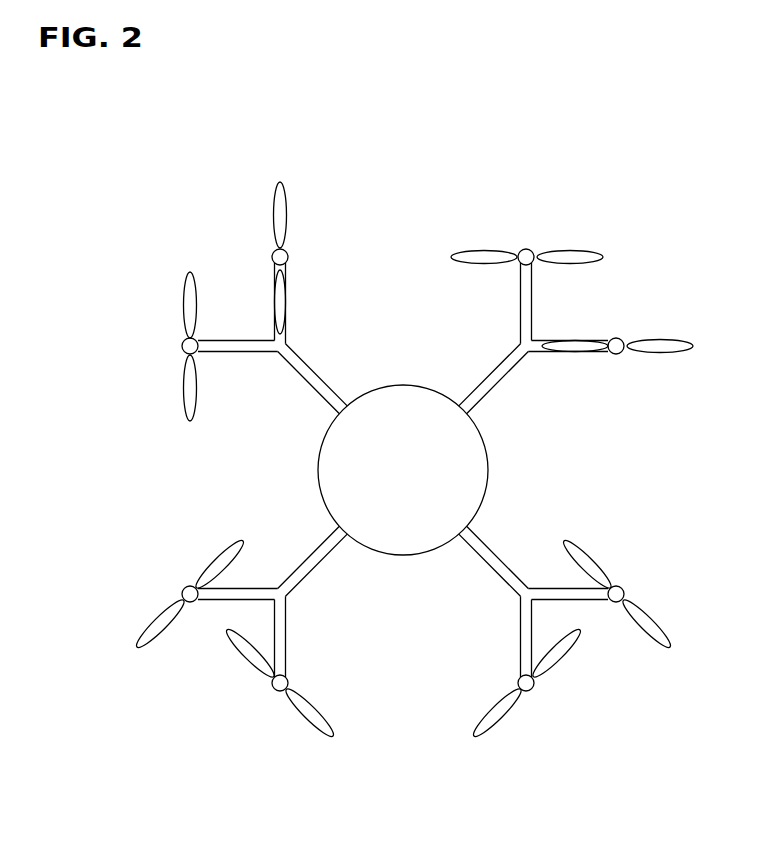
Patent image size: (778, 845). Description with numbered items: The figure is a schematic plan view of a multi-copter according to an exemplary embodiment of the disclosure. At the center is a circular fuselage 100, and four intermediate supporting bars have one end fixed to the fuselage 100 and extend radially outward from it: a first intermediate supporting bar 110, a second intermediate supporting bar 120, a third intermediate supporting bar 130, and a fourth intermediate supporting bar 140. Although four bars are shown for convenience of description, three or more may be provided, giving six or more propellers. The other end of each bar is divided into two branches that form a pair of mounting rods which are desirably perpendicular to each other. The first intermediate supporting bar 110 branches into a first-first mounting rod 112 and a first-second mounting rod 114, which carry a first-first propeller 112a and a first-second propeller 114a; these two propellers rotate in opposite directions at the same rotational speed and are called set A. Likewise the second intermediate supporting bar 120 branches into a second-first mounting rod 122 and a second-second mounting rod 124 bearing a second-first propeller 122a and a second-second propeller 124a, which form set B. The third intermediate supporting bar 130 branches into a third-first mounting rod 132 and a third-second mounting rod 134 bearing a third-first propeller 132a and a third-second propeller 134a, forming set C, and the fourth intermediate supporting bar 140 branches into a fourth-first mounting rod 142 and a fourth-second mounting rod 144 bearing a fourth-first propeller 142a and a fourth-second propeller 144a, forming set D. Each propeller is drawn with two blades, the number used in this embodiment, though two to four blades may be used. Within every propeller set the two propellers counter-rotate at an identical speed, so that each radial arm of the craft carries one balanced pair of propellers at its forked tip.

The fuselage 100 is at (475, 490).
The first intermediate supporting bar 110 is at (504, 370).
The first-first mounting rod 112 is at (522, 290).
The first-first propeller 112a is at (573, 257).
The first-second mounting rod 114 is at (543, 337).
The first-second propeller 114a is at (667, 346).
The second intermediate supporting bar 120 is at (317, 372).
The second-first mounting rod 122 is at (288, 335).
The second-first propeller 122a is at (281, 180).
The second-second mounting rod 124 is at (226, 353).
The second-second propeller 124a is at (190, 272).
The third intermediate supporting bar 130 is at (306, 559).
The third-first mounting rod 132 is at (218, 600).
The third-first propeller 132a is at (158, 625).
The third-second mounting rod 134 is at (286, 635).
The third-second propeller 134a is at (300, 720).
The fourth intermediate supporting bar 140 is at (487, 558).
The fourth-first mounting rod 142 is at (524, 646).
The fourth-first propeller 142a is at (500, 710).
The fourth-second mounting rod 144 is at (580, 600).
The fourth-second propeller 144a is at (650, 624).